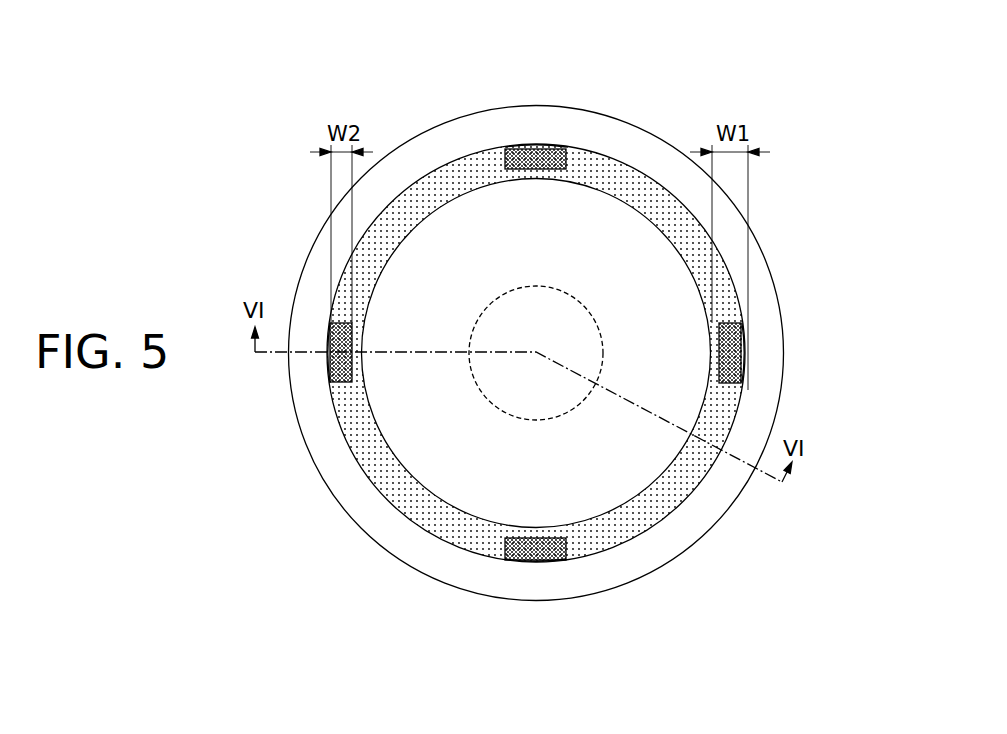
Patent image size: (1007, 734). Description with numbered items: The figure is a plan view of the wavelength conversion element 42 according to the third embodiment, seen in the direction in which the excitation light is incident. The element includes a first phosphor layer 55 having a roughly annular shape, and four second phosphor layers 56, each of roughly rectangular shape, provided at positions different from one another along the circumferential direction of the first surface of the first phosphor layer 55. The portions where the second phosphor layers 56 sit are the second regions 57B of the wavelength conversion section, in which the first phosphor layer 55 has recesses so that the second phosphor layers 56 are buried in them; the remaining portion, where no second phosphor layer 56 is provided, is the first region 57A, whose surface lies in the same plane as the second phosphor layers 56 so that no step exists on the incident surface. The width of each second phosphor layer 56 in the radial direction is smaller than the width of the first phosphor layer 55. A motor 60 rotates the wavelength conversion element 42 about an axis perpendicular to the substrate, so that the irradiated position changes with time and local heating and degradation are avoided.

The wavelength conversion element 42 is at (603, 108).
The first phosphor layer 55 is at (432, 182).
The second phosphor layer 56 is at (540, 149).
The first region 57A is at (677, 527).
The second region 57B is at (516, 137).
The motor 60 is at (571, 402).